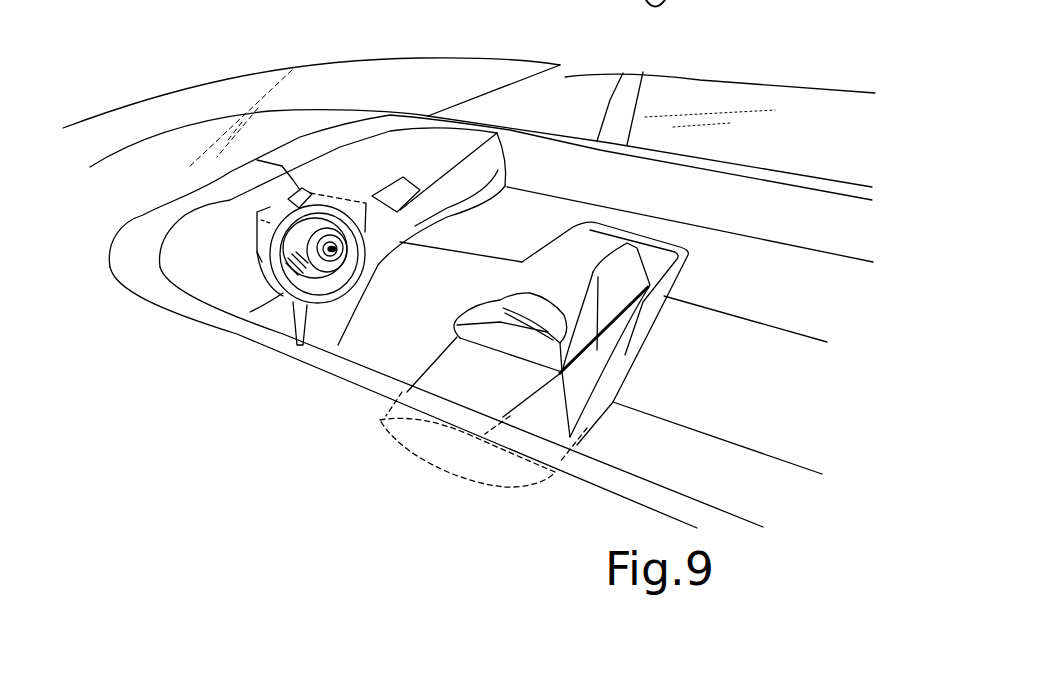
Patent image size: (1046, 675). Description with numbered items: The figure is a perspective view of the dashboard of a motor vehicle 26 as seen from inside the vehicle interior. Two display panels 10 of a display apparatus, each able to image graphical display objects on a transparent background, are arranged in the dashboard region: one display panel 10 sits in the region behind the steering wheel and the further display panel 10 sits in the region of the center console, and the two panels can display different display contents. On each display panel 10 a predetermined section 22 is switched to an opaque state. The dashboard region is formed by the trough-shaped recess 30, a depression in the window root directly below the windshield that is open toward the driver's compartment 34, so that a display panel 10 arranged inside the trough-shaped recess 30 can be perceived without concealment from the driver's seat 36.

The display panel 10 is at (250, 267).
The predetermined section 22 is at (380, 202).
The motor vehicle 26 is at (343, 88).
The trough-shaped recess 30 is at (218, 290).
The driver's compartment 34 is at (414, 314).
The driver's seat 36 is at (480, 380).